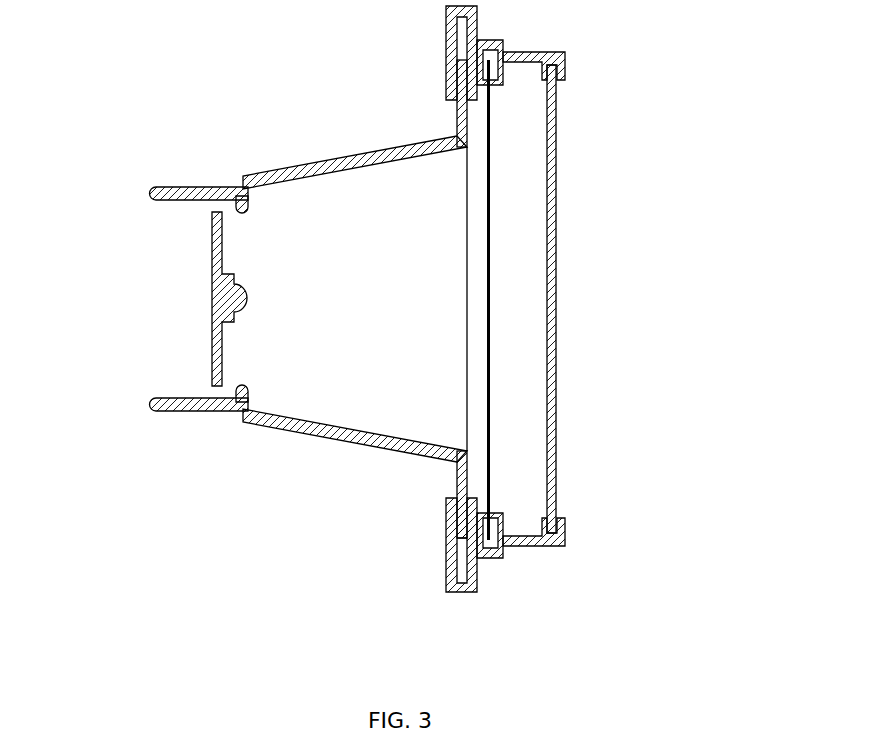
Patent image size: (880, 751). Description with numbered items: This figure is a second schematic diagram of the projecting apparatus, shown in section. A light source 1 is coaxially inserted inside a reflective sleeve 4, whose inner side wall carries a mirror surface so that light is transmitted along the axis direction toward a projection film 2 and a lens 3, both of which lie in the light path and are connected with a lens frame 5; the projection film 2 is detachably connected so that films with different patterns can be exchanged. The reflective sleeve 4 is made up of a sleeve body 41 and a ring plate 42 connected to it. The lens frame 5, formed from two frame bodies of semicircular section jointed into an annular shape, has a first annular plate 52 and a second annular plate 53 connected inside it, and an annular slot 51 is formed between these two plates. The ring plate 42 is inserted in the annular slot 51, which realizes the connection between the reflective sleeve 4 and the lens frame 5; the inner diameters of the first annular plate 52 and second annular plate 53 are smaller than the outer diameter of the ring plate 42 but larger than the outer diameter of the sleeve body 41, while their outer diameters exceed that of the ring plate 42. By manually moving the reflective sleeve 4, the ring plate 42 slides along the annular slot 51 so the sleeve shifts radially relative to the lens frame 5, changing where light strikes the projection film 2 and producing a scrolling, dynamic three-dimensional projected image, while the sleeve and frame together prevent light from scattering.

The light source 1 is at (222, 303).
The projection film 2 is at (489, 274).
The lens 3 is at (551, 252).
The reflective sleeve 4 is at (447, 272).
The sleeve body 41 is at (325, 423).
The ring plate 42 is at (468, 474).
The lens frame 5 is at (456, 578).
The annular slot 51 is at (455, 572).
The first annular plate 52 is at (447, 506).
The second annular plate 53 is at (481, 557).